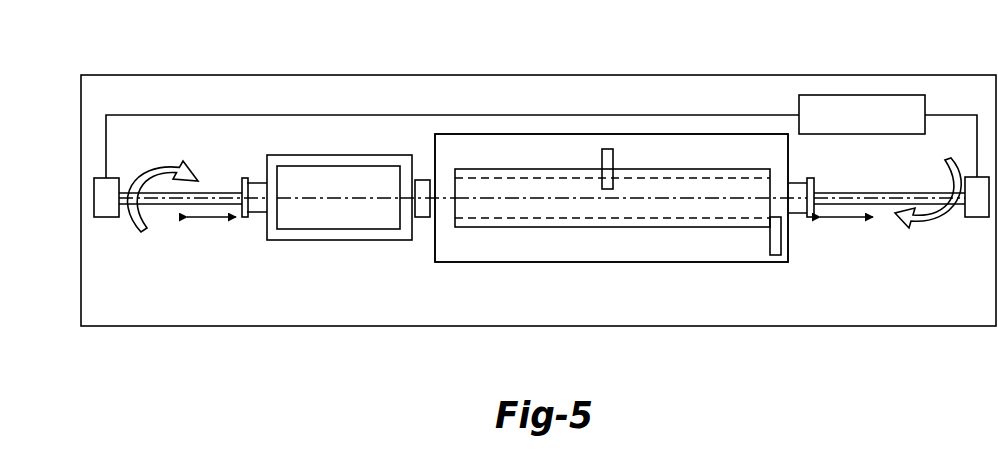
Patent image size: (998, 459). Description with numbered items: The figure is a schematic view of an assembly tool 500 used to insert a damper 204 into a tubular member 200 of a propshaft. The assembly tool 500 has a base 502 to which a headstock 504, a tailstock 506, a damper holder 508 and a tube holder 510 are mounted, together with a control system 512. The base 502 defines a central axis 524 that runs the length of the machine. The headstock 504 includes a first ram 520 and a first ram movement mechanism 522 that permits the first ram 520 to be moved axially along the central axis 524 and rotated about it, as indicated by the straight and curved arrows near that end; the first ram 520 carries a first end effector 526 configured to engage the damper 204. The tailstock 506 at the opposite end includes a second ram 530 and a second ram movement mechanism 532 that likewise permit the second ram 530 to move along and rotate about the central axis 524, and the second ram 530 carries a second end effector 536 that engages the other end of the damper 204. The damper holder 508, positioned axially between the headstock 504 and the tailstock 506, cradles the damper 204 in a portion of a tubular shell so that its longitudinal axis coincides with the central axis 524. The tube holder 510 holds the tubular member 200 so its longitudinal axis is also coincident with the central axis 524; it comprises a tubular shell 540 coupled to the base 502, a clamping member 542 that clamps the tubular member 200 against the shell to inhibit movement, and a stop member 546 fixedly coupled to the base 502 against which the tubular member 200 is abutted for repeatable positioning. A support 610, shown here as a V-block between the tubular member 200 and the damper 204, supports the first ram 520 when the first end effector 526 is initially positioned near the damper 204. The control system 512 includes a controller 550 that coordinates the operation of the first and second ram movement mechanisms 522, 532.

The assembly tool 500 is at (598, 52).
The base 502 is at (316, 75).
The headstock 504 is at (939, 240).
The tailstock 506 is at (160, 236).
The damper holder 508 is at (372, 240).
The tube holder 510 is at (665, 262).
The control system 512 is at (832, 103).
The first ram 520 is at (884, 204).
The first ram movement mechanism 522 is at (977, 217).
The central axis 524 is at (717, 198).
The first end effector 526 is at (810, 217).
The second ram 530 is at (185, 204).
The second ram movement mechanism 532 is at (105, 217).
The second end effector 536 is at (245, 178).
The tubular shell 540 is at (611, 198).
The clamping member 542 is at (606, 189).
The stop member 546 is at (775, 255).
The controller 550 is at (897, 105).
The tubular member 200 is at (575, 218).
The damper 204 is at (323, 215).
The support 610 is at (422, 217).